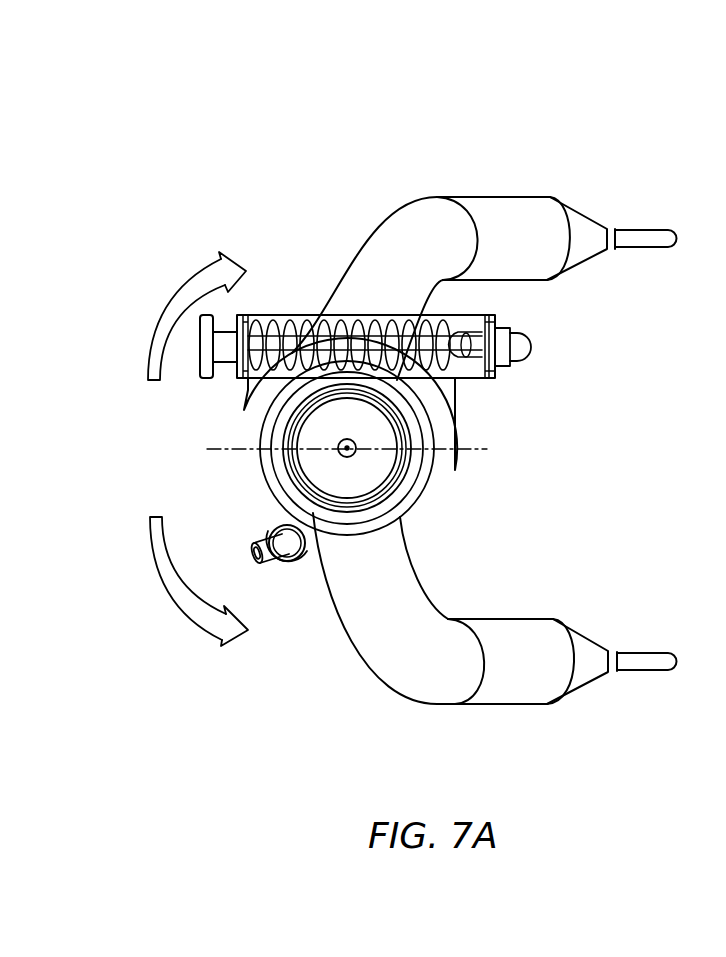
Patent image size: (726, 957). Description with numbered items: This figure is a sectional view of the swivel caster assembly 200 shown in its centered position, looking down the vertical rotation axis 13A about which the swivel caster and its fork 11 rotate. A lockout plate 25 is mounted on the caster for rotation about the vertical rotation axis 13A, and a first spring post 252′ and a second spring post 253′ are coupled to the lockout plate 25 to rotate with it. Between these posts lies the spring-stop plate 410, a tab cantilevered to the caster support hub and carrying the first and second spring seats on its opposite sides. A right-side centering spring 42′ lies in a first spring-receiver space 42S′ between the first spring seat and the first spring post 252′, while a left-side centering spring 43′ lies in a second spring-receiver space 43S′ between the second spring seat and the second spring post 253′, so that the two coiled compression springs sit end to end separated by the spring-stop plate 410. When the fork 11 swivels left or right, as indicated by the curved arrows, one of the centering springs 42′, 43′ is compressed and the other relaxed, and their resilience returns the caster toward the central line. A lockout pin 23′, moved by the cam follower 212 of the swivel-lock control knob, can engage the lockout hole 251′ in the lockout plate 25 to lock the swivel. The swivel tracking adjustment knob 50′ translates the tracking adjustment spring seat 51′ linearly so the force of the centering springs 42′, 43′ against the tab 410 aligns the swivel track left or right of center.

The second tube assembly 200 is at (528, 157).
The second spring-receiver space 43S′ is at (322, 315).
The first spring-receiver space 42S′ is at (430, 315).
The spring-stop plate 410 is at (352, 315).
The swivel tracking adjustment knob 50′ is at (213, 310).
The tracking adjustment spring seat 51′ is at (465, 312).
The first spring post 252′ is at (508, 316).
The second spring post 253′ is at (236, 382).
The right-side centering spring 42′ is at (431, 381).
The left-side centering spring 43′ is at (308, 367).
The vertical rotation axis 13A is at (356, 451).
The lockout plate 25 is at (435, 522).
The lockout hole 251′ is at (276, 508).
The cam follower 212 is at (253, 557).
The fork 11 is at (411, 608).
The lockout pin 23′ is at (293, 562).